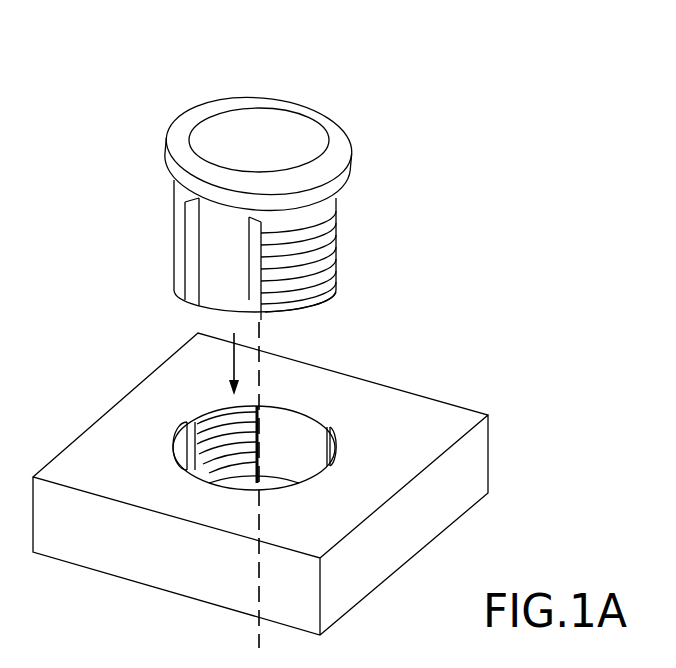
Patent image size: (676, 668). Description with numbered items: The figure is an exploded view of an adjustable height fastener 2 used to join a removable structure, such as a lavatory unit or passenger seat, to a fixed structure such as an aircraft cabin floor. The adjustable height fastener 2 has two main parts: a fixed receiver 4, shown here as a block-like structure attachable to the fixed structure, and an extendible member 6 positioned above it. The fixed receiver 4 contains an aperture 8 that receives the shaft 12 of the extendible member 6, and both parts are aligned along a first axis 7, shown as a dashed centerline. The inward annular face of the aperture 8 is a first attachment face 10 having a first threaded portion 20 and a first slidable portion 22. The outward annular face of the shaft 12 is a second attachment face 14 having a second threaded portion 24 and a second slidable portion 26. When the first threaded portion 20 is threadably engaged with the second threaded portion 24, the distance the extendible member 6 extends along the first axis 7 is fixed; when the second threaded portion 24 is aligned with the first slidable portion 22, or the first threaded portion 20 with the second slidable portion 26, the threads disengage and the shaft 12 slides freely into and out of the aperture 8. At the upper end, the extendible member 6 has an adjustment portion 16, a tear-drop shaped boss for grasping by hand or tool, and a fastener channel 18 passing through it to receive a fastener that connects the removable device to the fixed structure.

The adjustable height fastener 2 is at (357, 70).
The fixed receiver 4 is at (470, 318).
The extendible member 6 is at (375, 118).
The first axis 7 is at (260, 595).
The aperture 8 is at (284, 423).
The first attachment face 10 is at (508, 343).
The shaft 12 is at (112, 228).
The second attachment face 14 is at (68, 240).
The adjustment portion 16 is at (305, 182).
The fastener channel 18 is at (275, 143).
The first threaded portion 20 is at (328, 432).
The first slidable portion 22 is at (330, 467).
The second threaded portion 24 is at (180, 228).
The second slidable portion 26 is at (208, 258).